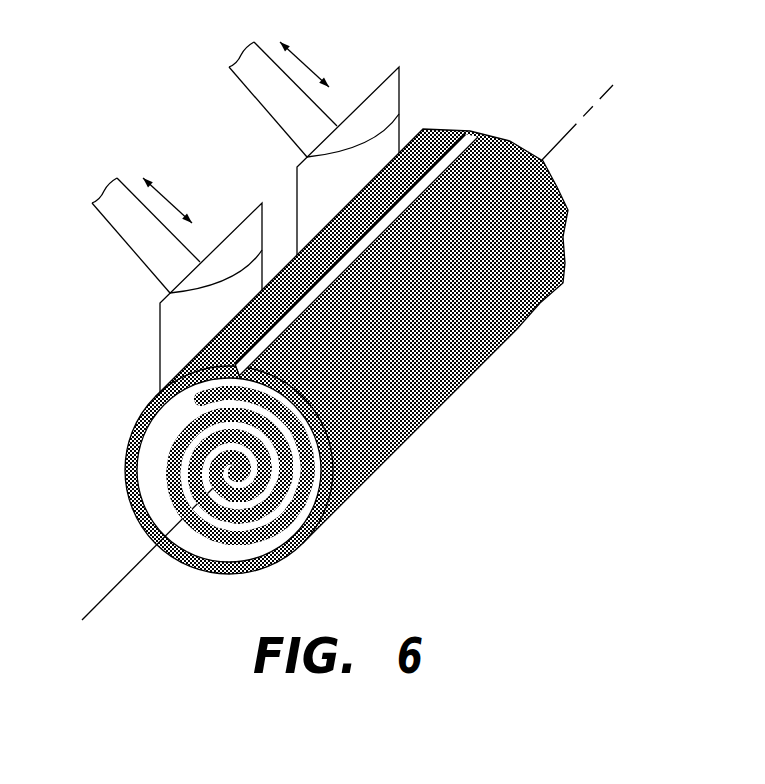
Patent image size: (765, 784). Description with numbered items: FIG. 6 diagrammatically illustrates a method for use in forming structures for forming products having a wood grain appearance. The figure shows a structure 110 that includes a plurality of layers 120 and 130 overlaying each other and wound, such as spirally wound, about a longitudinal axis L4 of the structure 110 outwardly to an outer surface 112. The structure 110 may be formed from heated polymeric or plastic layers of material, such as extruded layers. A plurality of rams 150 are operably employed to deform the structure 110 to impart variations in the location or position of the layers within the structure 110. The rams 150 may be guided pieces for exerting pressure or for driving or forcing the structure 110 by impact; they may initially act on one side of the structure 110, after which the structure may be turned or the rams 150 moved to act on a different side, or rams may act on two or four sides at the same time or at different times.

The structure 110 is at (405, 488).
The outer surface 112 is at (500, 328).
The layer 120 is at (141, 437).
The layer 130 is at (147, 472).
The rams 150 is at (186, 126).
The longitudinal axis L4 is at (582, 118).